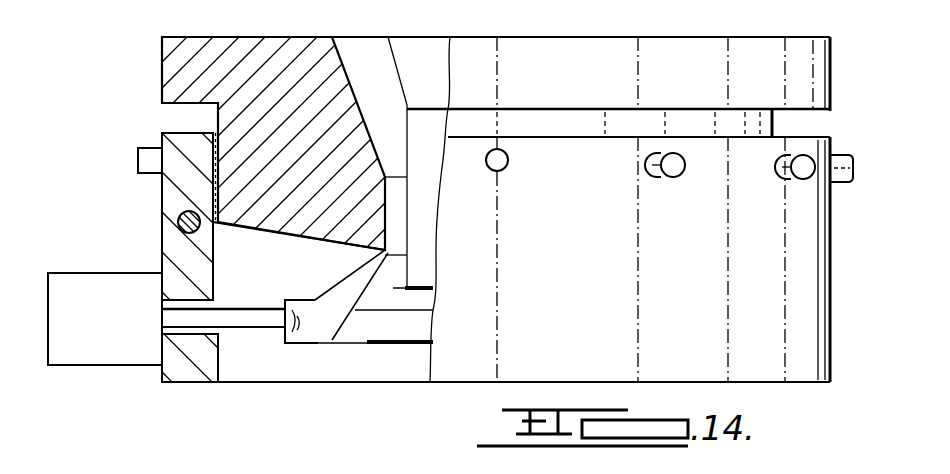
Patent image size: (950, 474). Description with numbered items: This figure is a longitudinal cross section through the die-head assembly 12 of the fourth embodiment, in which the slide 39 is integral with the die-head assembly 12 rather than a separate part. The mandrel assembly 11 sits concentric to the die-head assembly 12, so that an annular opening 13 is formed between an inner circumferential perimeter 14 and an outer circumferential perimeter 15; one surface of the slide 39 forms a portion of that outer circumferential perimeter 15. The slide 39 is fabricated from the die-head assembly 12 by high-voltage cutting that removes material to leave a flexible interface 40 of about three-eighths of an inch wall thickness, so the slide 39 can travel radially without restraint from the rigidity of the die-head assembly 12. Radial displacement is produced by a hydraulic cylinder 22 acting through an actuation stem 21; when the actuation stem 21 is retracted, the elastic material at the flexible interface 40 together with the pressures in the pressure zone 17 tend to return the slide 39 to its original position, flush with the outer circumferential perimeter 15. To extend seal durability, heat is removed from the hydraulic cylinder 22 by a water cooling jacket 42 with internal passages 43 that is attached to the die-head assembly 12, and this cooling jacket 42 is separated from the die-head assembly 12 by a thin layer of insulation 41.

The mandrel assembly 11 is at (432, 198).
The die-head assembly 12 is at (198, 63).
The annular opening 13 is at (352, 337).
The inner circumferential perimeter 14 is at (364, 330).
The outer circumferential perimeter 15 is at (342, 337).
The pressure zone 17 is at (385, 288).
The actuation stem 21 is at (246, 305).
The hydraulic cylinder 22 is at (74, 292).
The slide 39 is at (303, 327).
The flexible interface 40 is at (385, 248).
The insulation 41 is at (222, 168).
The water cooling jacket 42 is at (172, 242).
The internal passages 43 is at (182, 214).